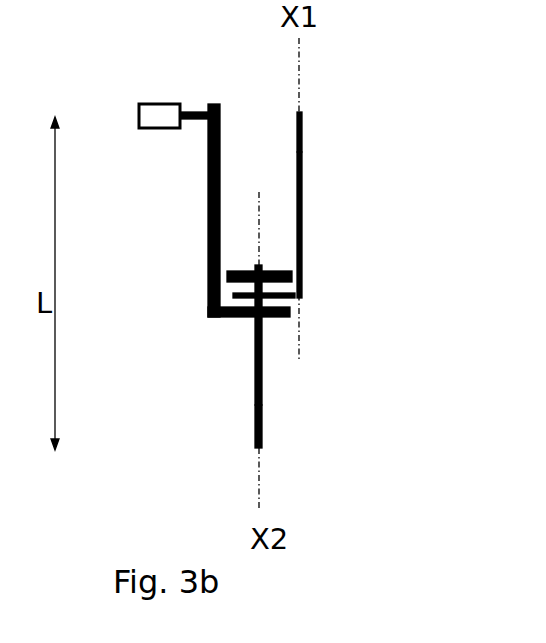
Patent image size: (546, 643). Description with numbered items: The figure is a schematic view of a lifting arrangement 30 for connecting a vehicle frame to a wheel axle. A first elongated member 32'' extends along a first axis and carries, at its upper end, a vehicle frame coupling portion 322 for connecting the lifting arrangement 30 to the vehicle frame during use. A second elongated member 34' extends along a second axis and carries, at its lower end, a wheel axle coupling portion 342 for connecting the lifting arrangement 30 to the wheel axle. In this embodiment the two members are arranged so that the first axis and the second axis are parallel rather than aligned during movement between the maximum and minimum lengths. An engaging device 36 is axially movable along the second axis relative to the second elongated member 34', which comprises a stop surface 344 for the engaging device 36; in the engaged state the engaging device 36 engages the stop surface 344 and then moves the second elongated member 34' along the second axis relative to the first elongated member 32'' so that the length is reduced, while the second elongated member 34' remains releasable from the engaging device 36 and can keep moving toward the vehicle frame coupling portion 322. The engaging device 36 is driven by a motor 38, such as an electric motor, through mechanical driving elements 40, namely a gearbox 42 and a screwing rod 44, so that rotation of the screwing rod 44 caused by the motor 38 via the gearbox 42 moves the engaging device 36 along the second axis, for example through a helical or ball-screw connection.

The lifting arrangement 30 is at (121, 113).
The motor 38 is at (162, 128).
The gearbox 42 is at (195, 110).
The screwing rod 44 is at (227, 108).
The mechanical driving elements 40 is at (201, 214).
The engaging device 36 is at (243, 318).
The first elongated member 32'' is at (361, 176).
The vehicle frame coupling portion 322 is at (302, 112).
The stop surface 344 is at (292, 272).
The second elongated member 34' is at (350, 387).
The wheel axle coupling portion 342 is at (262, 448).